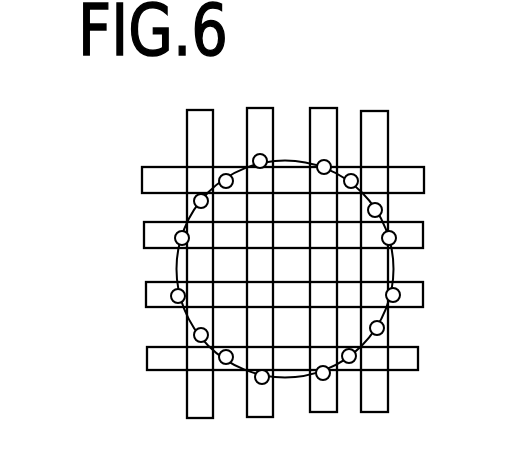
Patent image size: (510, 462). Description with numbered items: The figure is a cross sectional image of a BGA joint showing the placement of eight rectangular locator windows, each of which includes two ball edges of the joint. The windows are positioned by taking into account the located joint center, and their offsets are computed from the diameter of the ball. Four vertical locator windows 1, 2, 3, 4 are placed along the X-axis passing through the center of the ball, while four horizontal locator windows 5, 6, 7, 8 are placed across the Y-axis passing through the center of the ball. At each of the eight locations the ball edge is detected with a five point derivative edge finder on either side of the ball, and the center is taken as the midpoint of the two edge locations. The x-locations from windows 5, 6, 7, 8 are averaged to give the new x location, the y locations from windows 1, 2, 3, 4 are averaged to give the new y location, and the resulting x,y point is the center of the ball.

The locator window 1 is at (200, 244).
The locator window 2 is at (257, 244).
The locator window 3 is at (319, 241).
The locator window 4 is at (371, 241).
The locator window 5 is at (245, 179).
The locator window 6 is at (244, 236).
The locator window 7 is at (245, 288).
The locator window 8 is at (245, 355).